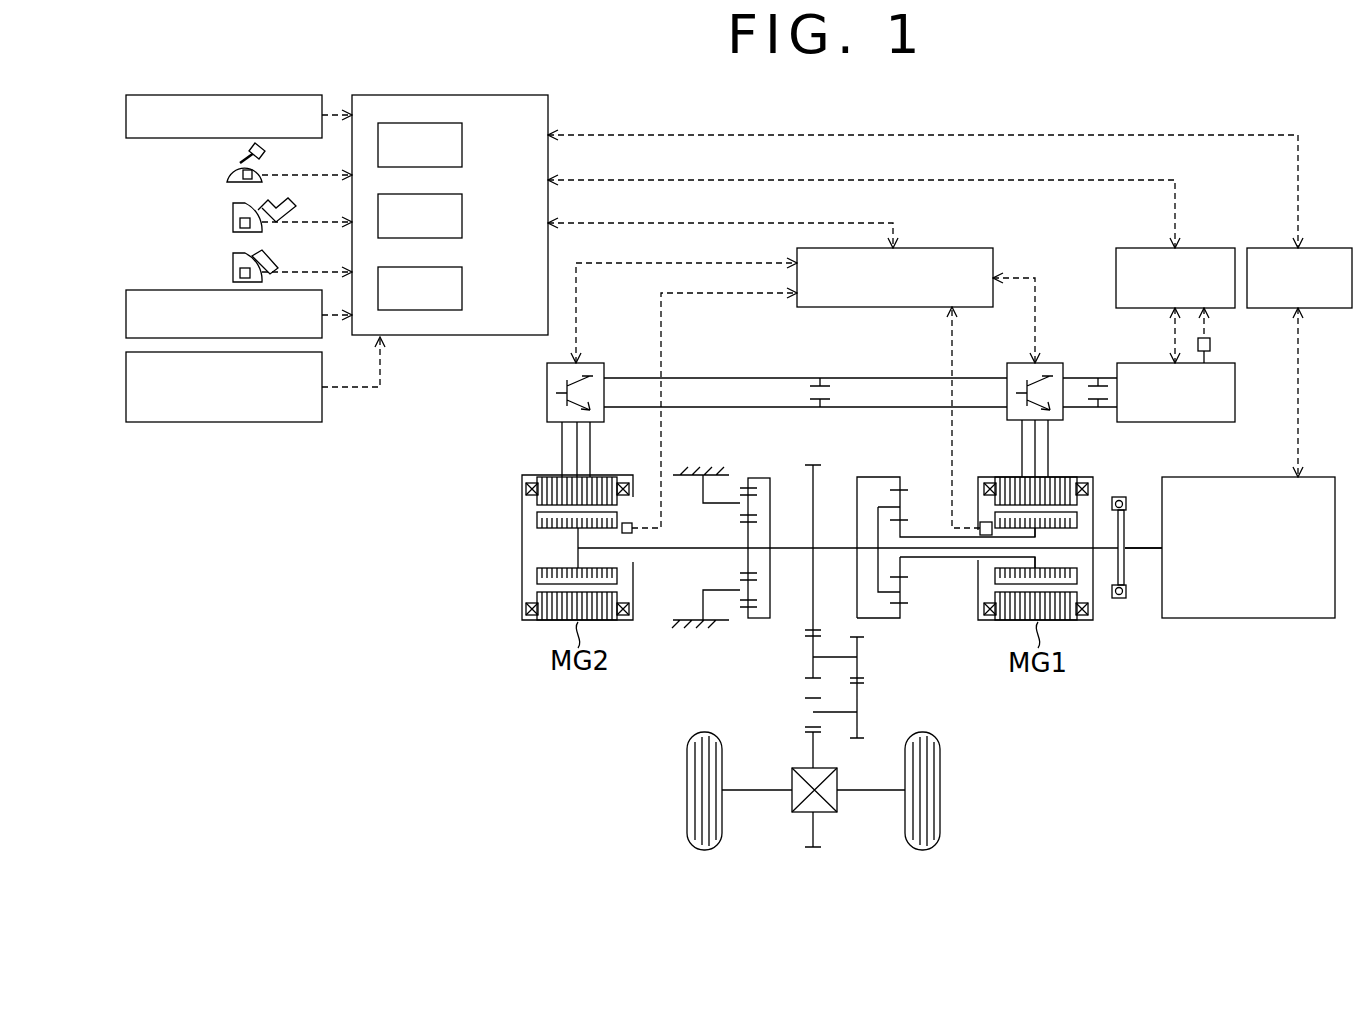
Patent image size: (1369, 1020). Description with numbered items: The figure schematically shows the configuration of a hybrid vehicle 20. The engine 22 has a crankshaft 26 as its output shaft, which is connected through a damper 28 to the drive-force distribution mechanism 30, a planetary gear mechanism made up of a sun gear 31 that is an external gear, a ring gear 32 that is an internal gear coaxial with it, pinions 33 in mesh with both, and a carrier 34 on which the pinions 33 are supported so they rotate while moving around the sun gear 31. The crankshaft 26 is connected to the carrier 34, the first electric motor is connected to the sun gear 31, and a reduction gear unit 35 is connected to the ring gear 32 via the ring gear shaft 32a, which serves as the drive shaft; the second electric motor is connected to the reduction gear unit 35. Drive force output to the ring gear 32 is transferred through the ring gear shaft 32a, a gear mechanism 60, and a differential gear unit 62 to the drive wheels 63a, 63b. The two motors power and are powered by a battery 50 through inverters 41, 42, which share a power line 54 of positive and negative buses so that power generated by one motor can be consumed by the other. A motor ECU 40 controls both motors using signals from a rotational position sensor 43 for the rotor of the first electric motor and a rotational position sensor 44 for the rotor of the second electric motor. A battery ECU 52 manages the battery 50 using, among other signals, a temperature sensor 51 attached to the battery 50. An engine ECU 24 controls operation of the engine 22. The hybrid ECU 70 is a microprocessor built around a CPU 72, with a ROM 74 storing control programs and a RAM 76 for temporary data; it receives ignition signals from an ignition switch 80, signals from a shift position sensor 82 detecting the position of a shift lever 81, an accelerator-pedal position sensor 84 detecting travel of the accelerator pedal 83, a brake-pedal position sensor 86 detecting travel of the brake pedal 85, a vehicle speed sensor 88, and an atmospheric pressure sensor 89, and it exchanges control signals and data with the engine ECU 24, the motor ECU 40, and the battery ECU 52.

The hybrid vehicle 20 is at (1098, 68).
The engine 22 is at (1250, 620).
The engine ECU 24 is at (1320, 248).
The crankshaft 26 is at (1142, 550).
The damper 28 is at (1120, 600).
The drive-force distribution mechanism 30 is at (946, 527).
The sun gear 31 is at (900, 568).
The ring gear 32 is at (900, 612).
The ring gear shaft 32a is at (833, 547).
The pinions 33 is at (900, 590).
The carrier 34 is at (878, 507).
The reduction gear unit 35 is at (751, 462).
The motor ECU 40 is at (930, 248).
The inverter 41 is at (1052, 363).
The inverter 42 is at (594, 363).
The rotational position sensor 43 is at (984, 522).
The rotational position sensor 44 is at (626, 523).
The battery 50 is at (1178, 424).
The temperature sensor 51 is at (1212, 345).
The battery ECU 52 is at (1203, 248).
The power line 54 is at (884, 405).
The gear mechanism 60 is at (878, 695).
The differential gear unit 62 is at (837, 800).
The drive wheel 63a is at (687, 790).
The drive wheel 63b is at (940, 790).
The hybrid ECU 70 is at (448, 95).
The CPU 72 is at (462, 145).
The ROM 74 is at (462, 216).
The RAM 76 is at (462, 288).
The ignition switch 80 is at (126, 115).
The shift lever 81 is at (240, 163).
The shift position sensor 82 is at (228, 178).
The accelerator pedal 83 is at (237, 205).
The accelerator-pedal position sensor 84 is at (233, 224).
The brake pedal 85 is at (236, 253).
The brake-pedal position sensor 86 is at (233, 274).
The vehicle speed sensor 88 is at (126, 317).
The atmospheric pressure sensor 89 is at (126, 387).